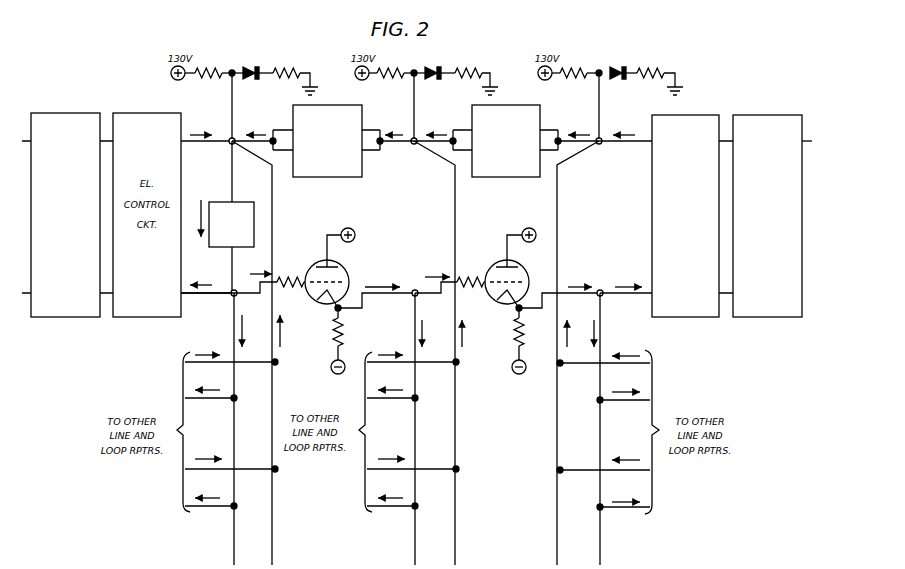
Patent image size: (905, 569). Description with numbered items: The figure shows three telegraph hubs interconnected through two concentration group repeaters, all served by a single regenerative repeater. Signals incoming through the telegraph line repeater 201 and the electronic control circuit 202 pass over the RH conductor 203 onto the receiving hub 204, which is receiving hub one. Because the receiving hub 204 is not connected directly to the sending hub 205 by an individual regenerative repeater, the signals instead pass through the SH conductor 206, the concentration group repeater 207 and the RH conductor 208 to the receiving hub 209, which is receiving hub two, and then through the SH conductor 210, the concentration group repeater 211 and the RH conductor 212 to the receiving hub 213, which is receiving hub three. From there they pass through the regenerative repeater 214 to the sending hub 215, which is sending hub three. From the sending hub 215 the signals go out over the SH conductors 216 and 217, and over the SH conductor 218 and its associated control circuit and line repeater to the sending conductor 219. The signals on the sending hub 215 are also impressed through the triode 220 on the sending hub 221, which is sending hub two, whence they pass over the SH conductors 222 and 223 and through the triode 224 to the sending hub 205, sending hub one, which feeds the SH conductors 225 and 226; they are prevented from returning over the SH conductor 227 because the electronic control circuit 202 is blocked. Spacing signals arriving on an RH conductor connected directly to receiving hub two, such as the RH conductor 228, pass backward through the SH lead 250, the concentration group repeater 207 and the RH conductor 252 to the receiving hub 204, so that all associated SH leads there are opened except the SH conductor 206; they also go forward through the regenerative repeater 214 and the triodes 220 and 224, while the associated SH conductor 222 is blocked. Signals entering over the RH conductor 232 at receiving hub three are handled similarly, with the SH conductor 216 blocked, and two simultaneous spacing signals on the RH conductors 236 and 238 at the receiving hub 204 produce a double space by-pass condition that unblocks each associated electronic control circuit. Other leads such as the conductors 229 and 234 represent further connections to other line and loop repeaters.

The telegraph line repeater 201 is at (757, 128).
The electronic control circuit 202 is at (693, 128).
The RH conductor 203 is at (622, 145).
The receiving hub 204 is at (603, 139).
The sending hub 205 is at (600, 290).
The SH conductor 206 is at (536, 153).
The concentration group repeater 207 is at (505, 178).
The RH conductor 208 is at (447, 138).
The receiving hub 209 is at (411, 139).
The SH conductor 210 is at (388, 153).
The concentration group repeater 211 is at (351, 172).
The RH conductor 212 is at (272, 132).
The receiving hub 213 is at (229, 139).
The regenerative repeater 214 is at (244, 204).
The sending hub 215 is at (232, 290).
The SH conductor 216 is at (223, 400).
The SH conductor 217 is at (222, 508).
The SH conductor 218 is at (206, 298).
The sending conductor 219 is at (25, 297).
The triode 220 is at (347, 275).
The sending hub 221 is at (413, 290).
The SH conductor 222 is at (400, 400).
The SH conductor 223 is at (401, 508).
The triode 224 is at (487, 275).
The SH conductor 225 is at (615, 402).
The SH conductor 226 is at (613, 509).
The SH conductor 227 is at (622, 297).
The RH conductor 228 is at (407, 360).
The receive hub lead from loop repeater 229 is at (407, 467).
The RH conductor 232 is at (227, 360).
The receive hub lead from loop repeater 234 is at (226, 467).
The RH conductor 236 is at (608, 360).
The RH conductor 238 is at (607, 468).
The SH lead 250 is at (457, 153).
The RH conductor 252 is at (565, 133).